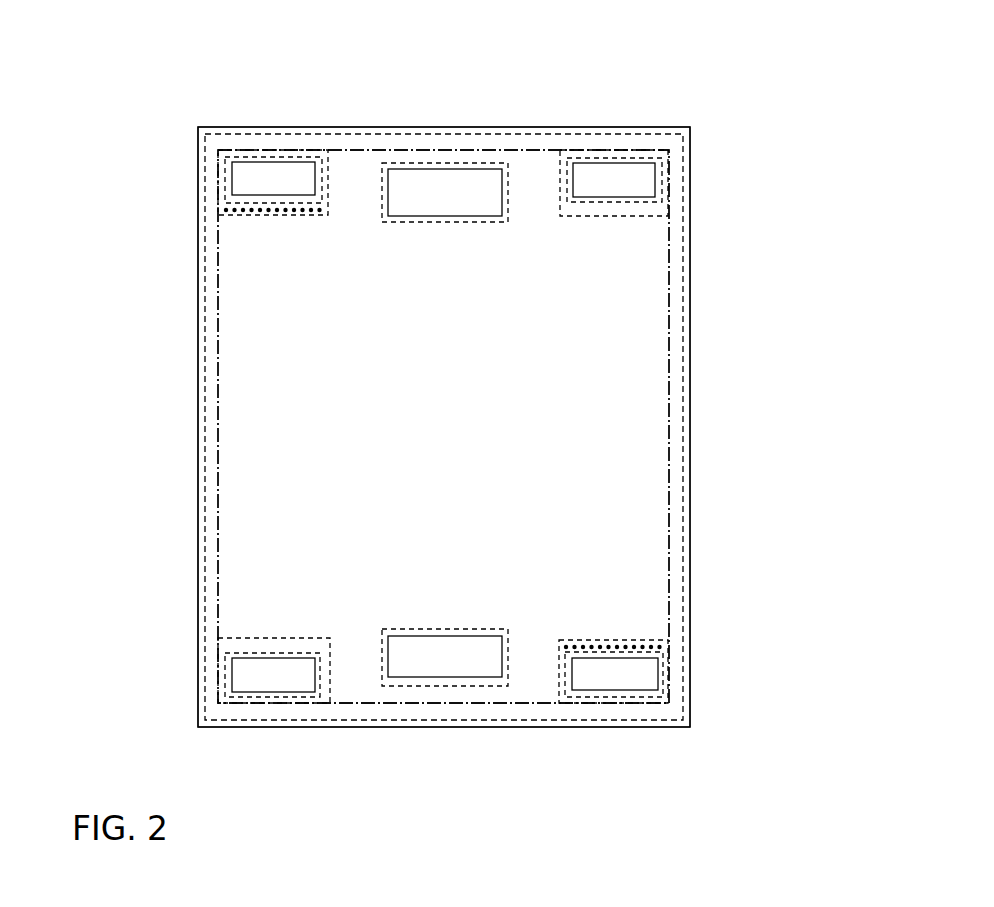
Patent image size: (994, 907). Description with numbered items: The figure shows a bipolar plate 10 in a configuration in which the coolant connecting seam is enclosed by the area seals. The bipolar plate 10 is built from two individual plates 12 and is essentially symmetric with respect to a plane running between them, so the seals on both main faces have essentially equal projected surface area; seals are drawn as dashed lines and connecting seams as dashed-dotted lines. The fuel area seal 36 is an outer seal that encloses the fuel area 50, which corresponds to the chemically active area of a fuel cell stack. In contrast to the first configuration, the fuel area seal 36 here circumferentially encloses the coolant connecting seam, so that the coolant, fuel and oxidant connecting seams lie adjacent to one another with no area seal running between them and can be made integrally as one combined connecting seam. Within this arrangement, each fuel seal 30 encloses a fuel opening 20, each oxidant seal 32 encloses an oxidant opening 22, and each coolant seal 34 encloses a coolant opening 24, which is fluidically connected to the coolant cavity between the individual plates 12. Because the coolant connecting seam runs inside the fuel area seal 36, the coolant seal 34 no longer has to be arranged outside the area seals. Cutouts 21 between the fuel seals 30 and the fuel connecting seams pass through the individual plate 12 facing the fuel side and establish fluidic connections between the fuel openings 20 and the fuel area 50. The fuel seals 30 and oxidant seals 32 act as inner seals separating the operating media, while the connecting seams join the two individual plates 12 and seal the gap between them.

The bipolar plate 10 is at (727, 92).
The individual plate 12 is at (360, 127).
The fuel opening 20 is at (245, 182).
The cutouts 21 is at (297, 212).
The oxidant opening 22 is at (607, 185).
The coolant opening 24 is at (443, 202).
The fuel seal 30 is at (226, 188).
The oxidant seal 32 is at (666, 201).
The coolant seal 34 is at (482, 224).
The fuel area seal 36 is at (690, 153).
The fuel area 50 is at (422, 493).